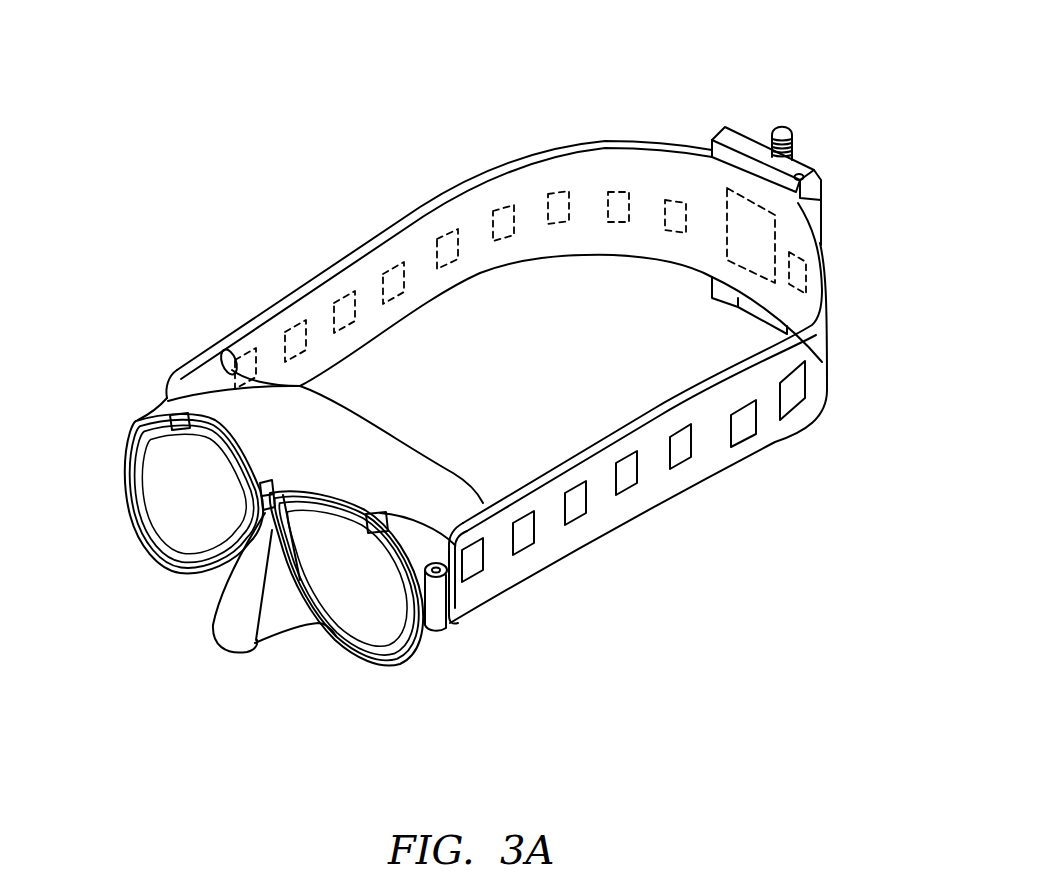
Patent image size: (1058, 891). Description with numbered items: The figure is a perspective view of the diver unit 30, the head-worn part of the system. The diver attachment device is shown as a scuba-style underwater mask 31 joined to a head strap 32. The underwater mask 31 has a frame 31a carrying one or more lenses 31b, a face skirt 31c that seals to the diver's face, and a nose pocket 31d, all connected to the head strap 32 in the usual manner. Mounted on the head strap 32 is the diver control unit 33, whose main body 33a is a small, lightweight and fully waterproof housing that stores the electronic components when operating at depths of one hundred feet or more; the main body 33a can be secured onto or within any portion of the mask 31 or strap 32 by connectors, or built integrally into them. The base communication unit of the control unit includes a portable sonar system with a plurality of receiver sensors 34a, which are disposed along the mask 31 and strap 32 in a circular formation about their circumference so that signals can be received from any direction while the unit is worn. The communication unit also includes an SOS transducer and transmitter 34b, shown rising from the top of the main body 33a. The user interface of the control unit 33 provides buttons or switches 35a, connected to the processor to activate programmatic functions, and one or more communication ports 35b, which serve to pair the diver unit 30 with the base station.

The diver unit 30 is at (157, 167).
The underwater mask 31 is at (150, 558).
The frame 31a is at (127, 457).
The lenses 31b is at (168, 486).
The face skirt 31c is at (343, 450).
The nose pocket 31d is at (240, 622).
The head strap 32 is at (572, 553).
The diver control unit 33 is at (769, 249).
The main body 33a is at (740, 127).
The receiver sensors 34a is at (393, 272).
The SOS transducer and transmitter 34b is at (784, 124).
The buttons/switches 35a is at (808, 172).
The communication ports 35b is at (757, 313).